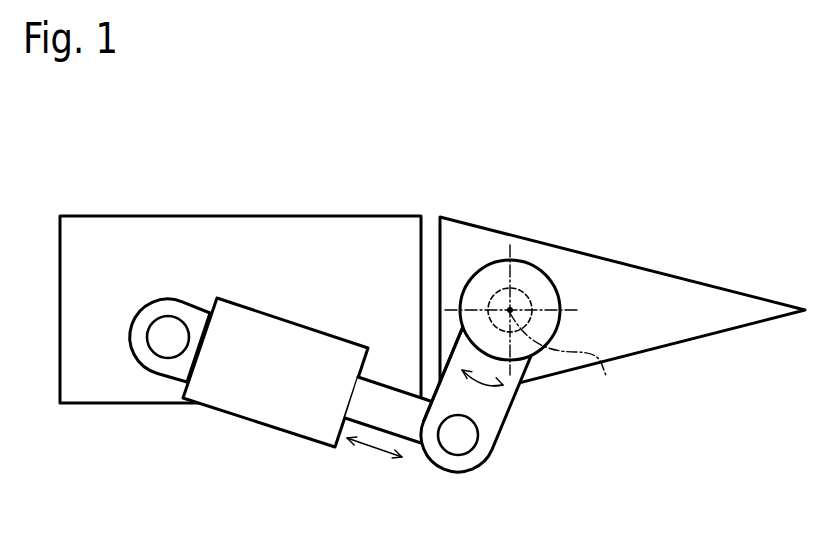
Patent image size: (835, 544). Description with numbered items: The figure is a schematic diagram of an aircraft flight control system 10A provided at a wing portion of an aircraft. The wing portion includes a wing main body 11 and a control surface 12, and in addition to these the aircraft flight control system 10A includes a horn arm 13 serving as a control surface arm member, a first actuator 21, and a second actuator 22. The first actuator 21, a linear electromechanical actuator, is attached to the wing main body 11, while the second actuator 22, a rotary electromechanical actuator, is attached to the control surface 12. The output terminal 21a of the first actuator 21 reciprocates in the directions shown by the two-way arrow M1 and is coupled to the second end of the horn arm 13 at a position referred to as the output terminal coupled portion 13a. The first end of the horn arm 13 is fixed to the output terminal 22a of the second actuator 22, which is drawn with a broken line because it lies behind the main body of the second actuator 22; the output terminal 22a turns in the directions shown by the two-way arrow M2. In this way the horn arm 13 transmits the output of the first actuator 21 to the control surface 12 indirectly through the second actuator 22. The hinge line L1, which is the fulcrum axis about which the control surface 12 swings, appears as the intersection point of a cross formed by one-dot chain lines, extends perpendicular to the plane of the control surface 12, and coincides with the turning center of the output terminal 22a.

The aircraft flight control system 10A is at (432, 319).
The wing main body 11 is at (172, 222).
The control surface 12 is at (597, 259).
The horn arm 13 is at (487, 453).
The output terminal coupled portion 13a is at (427, 414).
The first actuator 21 is at (272, 421).
The output terminal 21a is at (412, 443).
The second actuator 22 is at (530, 265).
The output terminal 22a is at (487, 300).
The hinge line L1 is at (568, 360).
The two-way arrow M1 is at (374, 462).
The two-way arrow M2 is at (481, 391).